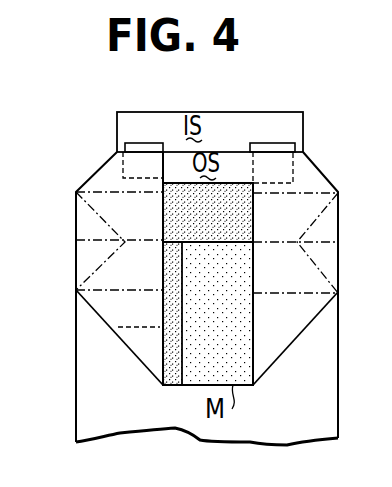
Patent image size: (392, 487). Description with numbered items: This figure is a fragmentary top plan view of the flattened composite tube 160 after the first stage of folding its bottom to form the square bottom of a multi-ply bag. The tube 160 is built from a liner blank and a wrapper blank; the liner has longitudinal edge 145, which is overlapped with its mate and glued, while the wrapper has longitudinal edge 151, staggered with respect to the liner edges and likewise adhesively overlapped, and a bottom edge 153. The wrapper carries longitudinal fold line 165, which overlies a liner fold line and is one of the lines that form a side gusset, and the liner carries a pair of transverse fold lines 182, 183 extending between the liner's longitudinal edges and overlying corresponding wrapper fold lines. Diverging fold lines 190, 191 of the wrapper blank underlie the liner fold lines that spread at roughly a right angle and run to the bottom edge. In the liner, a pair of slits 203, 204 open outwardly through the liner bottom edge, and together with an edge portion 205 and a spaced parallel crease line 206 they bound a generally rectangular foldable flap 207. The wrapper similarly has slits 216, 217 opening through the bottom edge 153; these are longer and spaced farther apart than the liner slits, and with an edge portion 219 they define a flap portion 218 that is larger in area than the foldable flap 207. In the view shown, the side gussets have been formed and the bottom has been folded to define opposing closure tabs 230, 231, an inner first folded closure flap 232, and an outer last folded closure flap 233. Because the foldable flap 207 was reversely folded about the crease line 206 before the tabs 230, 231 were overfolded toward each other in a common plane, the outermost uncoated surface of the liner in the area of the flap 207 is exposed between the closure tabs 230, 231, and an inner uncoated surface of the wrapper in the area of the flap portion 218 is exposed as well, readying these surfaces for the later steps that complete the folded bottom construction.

The longitudinal edge 145 is at (185, 333).
The longitudinal edge 151 is at (43, 440).
The bottom edge 153 is at (165, 258).
The tube 160 is at (300, 430).
The longitudinal fold line 165 is at (115, 222).
The transverse fold line 182 is at (225, 281).
The transverse fold line 183 is at (199, 304).
The fold line 190 is at (120, 340).
The fold line 191 is at (110, 158).
The slit 203 is at (153, 143).
The slit 204 is at (273, 143).
The edge portion 205 is at (189, 183).
The crease line 206 is at (222, 113).
The foldable flap 207 is at (235, 184).
The slit 216 is at (138, 150).
The slit 217 is at (293, 146).
The flap portion 218 is at (204, 112).
The edge portion 219 is at (275, 112).
The closure tab 230 is at (318, 212).
The closure tab 231 is at (97, 248).
The inner first folded closure flap 232 is at (278, 334).
The outer last folded closure flap 233 is at (305, 113).